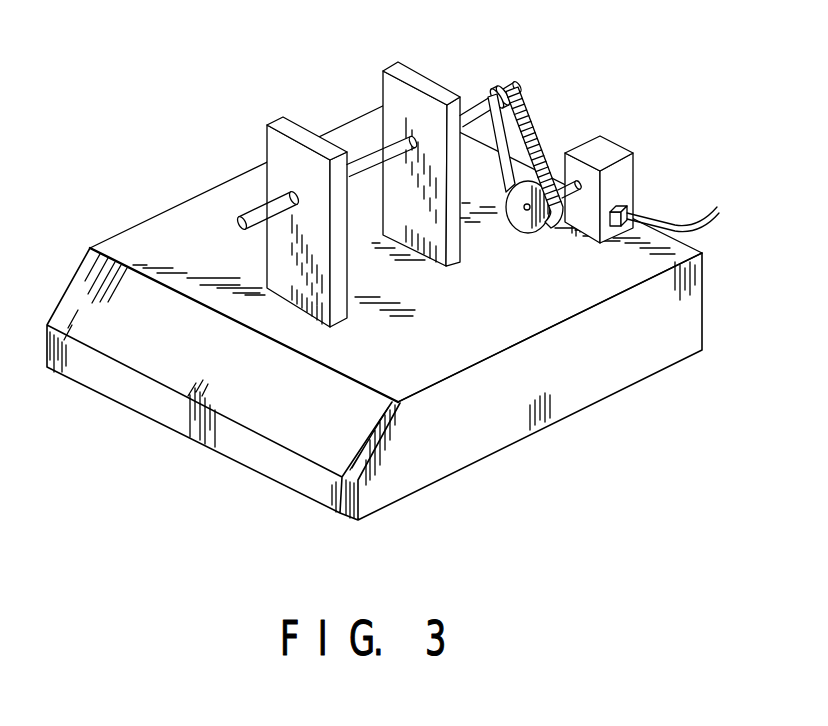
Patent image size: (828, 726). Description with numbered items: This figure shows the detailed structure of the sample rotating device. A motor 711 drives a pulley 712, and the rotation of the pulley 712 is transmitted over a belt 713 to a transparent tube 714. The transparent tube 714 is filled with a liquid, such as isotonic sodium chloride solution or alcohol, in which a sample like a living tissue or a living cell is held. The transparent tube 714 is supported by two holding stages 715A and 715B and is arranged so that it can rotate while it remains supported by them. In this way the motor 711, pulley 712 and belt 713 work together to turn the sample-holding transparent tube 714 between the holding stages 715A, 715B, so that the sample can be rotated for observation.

The motor 711 is at (627, 172).
The pulley 712 is at (525, 232).
The belt 713 is at (535, 138).
The transparent tube 714 is at (247, 216).
The holding stage 715A is at (278, 122).
The holding stage 715B is at (395, 63).